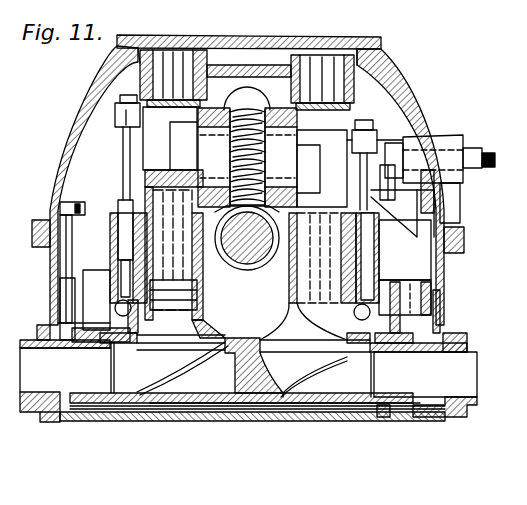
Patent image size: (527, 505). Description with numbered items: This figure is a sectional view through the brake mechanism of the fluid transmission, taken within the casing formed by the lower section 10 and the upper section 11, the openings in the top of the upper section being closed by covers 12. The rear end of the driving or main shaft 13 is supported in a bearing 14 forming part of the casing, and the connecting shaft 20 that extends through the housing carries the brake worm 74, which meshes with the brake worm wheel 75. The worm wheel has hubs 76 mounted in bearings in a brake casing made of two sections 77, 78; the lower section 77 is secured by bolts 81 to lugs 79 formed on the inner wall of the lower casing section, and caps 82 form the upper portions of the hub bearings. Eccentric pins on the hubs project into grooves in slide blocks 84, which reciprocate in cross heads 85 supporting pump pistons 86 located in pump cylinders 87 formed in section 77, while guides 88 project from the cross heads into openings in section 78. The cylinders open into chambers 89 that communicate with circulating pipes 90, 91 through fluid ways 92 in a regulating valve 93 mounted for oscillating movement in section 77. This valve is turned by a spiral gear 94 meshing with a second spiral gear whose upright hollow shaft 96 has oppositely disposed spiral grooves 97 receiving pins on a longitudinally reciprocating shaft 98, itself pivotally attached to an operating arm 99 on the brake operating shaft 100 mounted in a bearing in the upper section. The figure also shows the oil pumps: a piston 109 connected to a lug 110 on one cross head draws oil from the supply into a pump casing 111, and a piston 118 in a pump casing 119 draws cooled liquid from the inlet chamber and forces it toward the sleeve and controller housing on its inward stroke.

The lower section of transmission casing 10 is at (56, 283).
The upper section of transmission casing 11 is at (80, 103).
The covers 12 is at (125, 445).
The driving or main shaft 13 is at (170, 445).
The bearing 14 is at (359, 482).
The connecting shaft 20 is at (250, 254).
The brake worm 74 is at (280, 262).
The brake worm wheel 75 is at (231, 147).
The hubs 76 is at (291, 149).
The lower section of brake casing 77 is at (145, 172).
The upper section of brake casing 78 is at (226, 66).
The lugs 79 is at (427, 315).
The bolts 81 is at (70, 198).
The caps 82 is at (276, 123).
The slide blocks 84 is at (183, 134).
The cross heads 85 is at (155, 143).
The pump pistons 86 is at (143, 225).
The pump cylinders 87 is at (194, 272).
The guides 88 is at (166, 70).
The chambers 89 is at (329, 337).
The circulating pipe 90 is at (464, 405).
The circulating pipe 91 is at (28, 394).
The fluid ways 92 is at (299, 385).
The regulating valve 93 is at (218, 396).
The spiral gear 94 is at (371, 400).
The upright hollow shaft 96 is at (450, 334).
The spiral grooves 97 is at (394, 307).
The longitudinally reciprocating shaft 98 is at (390, 214).
The operating arm 99 is at (426, 145).
The brake operating shaft 100 is at (468, 150).
The piston 109 is at (360, 266).
The lug 110 is at (375, 138).
The pump casing 111 is at (303, 321).
The piston 118 is at (127, 244).
The pump casing 119 is at (119, 313).